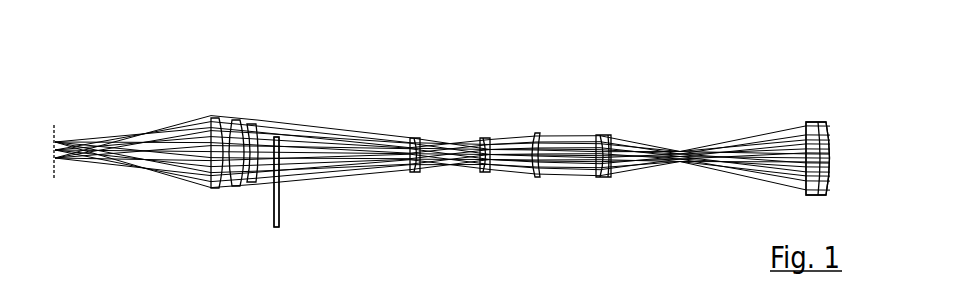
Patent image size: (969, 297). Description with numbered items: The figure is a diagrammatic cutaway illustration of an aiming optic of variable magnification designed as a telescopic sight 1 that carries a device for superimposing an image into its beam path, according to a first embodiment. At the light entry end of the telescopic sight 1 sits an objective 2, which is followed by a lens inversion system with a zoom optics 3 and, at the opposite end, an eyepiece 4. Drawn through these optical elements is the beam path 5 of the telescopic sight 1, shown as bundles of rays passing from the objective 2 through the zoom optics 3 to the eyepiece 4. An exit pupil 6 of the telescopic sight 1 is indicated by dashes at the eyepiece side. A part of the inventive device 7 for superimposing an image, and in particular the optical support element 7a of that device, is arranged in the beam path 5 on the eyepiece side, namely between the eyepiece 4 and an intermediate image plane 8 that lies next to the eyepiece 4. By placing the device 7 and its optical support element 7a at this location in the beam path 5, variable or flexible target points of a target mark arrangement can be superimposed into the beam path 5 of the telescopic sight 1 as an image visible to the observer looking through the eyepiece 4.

The telescopic sight 1 is at (823, 97).
The objective 2 is at (752, 113).
The zoom optics 3 is at (442, 126).
The eyepiece 4 is at (233, 104).
The beam path 5 is at (675, 124).
The exit pupil 6 is at (56, 125).
The device for superimposing an image 7 is at (262, 216).
The optical support element 7a is at (283, 213).
The intermediate image plane 8 is at (314, 124).